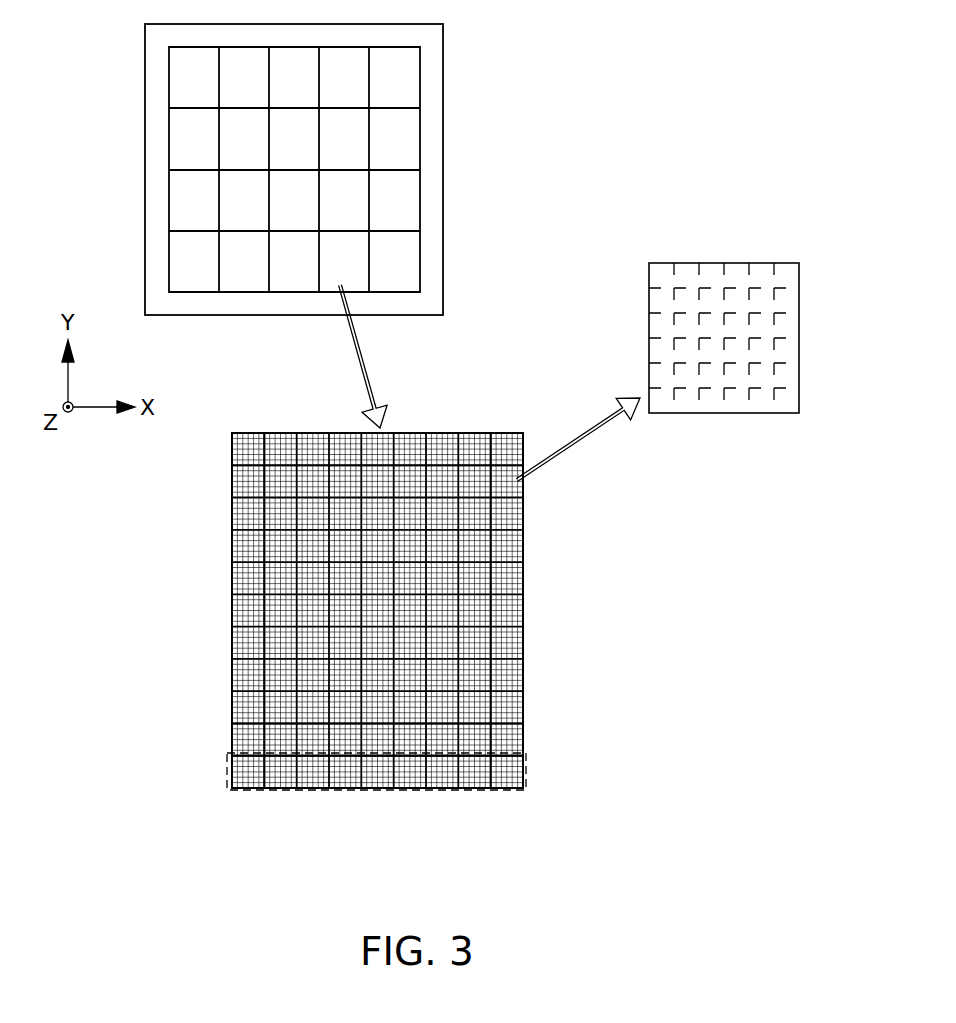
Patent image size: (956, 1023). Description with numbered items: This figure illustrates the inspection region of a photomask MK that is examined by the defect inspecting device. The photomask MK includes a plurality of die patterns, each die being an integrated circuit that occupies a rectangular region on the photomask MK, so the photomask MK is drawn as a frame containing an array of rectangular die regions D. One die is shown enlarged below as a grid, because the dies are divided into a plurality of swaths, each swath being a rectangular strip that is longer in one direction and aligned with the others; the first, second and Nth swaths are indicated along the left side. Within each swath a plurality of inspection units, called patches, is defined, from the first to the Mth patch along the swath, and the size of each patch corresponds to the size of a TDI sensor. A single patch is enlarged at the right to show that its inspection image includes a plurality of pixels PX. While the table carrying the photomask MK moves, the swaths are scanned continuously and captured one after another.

The photomask MK is at (443, 80).
The mask pattern / dot openings D is at (412, 139).
The pixel PX is at (787, 405).